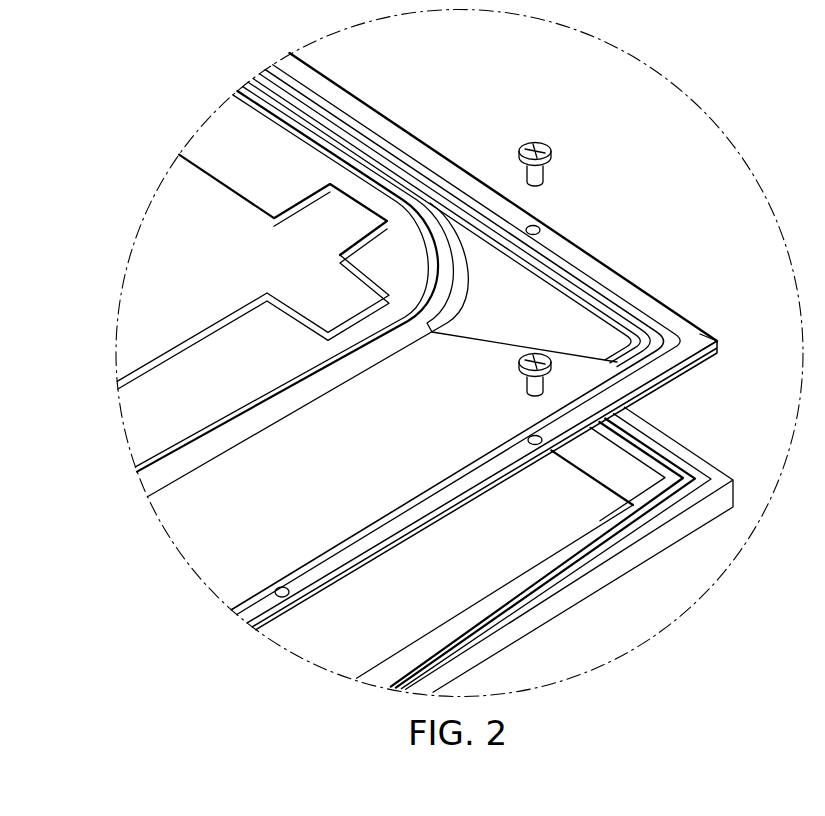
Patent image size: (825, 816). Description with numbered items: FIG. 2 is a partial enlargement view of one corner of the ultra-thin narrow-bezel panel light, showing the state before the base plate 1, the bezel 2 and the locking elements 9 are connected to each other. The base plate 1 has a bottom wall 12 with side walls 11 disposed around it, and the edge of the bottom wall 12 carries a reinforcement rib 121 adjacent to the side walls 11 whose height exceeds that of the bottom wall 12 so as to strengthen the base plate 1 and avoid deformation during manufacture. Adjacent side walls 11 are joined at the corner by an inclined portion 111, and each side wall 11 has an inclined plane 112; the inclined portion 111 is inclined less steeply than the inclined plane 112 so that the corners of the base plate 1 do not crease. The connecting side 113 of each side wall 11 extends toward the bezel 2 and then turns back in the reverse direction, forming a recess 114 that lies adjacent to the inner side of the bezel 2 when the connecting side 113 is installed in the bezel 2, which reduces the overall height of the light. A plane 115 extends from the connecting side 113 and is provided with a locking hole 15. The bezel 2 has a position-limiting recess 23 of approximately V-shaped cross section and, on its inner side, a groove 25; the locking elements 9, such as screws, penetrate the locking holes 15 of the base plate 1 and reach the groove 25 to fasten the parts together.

The base plate 1 is at (120, 340).
The side wall 11 is at (350, 492).
The inclined portion 111 is at (507, 303).
The inclined plane 112 is at (230, 530).
The connecting side 113 is at (686, 312).
The recess 114 is at (620, 318).
The plane 115 is at (430, 158).
The bottom wall 12 is at (178, 248).
The reinforcement rib 121 is at (282, 116).
The locking hole 15 is at (526, 227).
The locking element 9 is at (552, 148).
The bezel 2 is at (627, 577).
The position-limiting recess 23 is at (710, 480).
The groove 25 is at (672, 470).